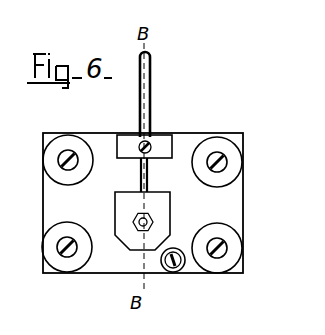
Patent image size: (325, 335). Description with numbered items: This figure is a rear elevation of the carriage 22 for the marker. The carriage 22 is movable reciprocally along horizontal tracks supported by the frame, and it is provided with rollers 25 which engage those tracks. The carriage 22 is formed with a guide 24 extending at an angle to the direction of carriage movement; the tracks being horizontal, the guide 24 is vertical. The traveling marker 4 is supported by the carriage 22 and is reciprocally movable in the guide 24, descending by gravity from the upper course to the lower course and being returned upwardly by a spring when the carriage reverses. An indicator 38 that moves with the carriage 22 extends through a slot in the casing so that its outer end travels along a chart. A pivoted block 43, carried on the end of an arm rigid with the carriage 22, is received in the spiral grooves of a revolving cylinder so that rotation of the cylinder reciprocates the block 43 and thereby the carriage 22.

The traveling marker 4 is at (157, 210).
The carriage 22 is at (237, 202).
The guide 24 is at (148, 181).
The rollers 25 is at (64, 184).
The indicator 38 is at (152, 97).
The pivoted block 43 is at (173, 274).